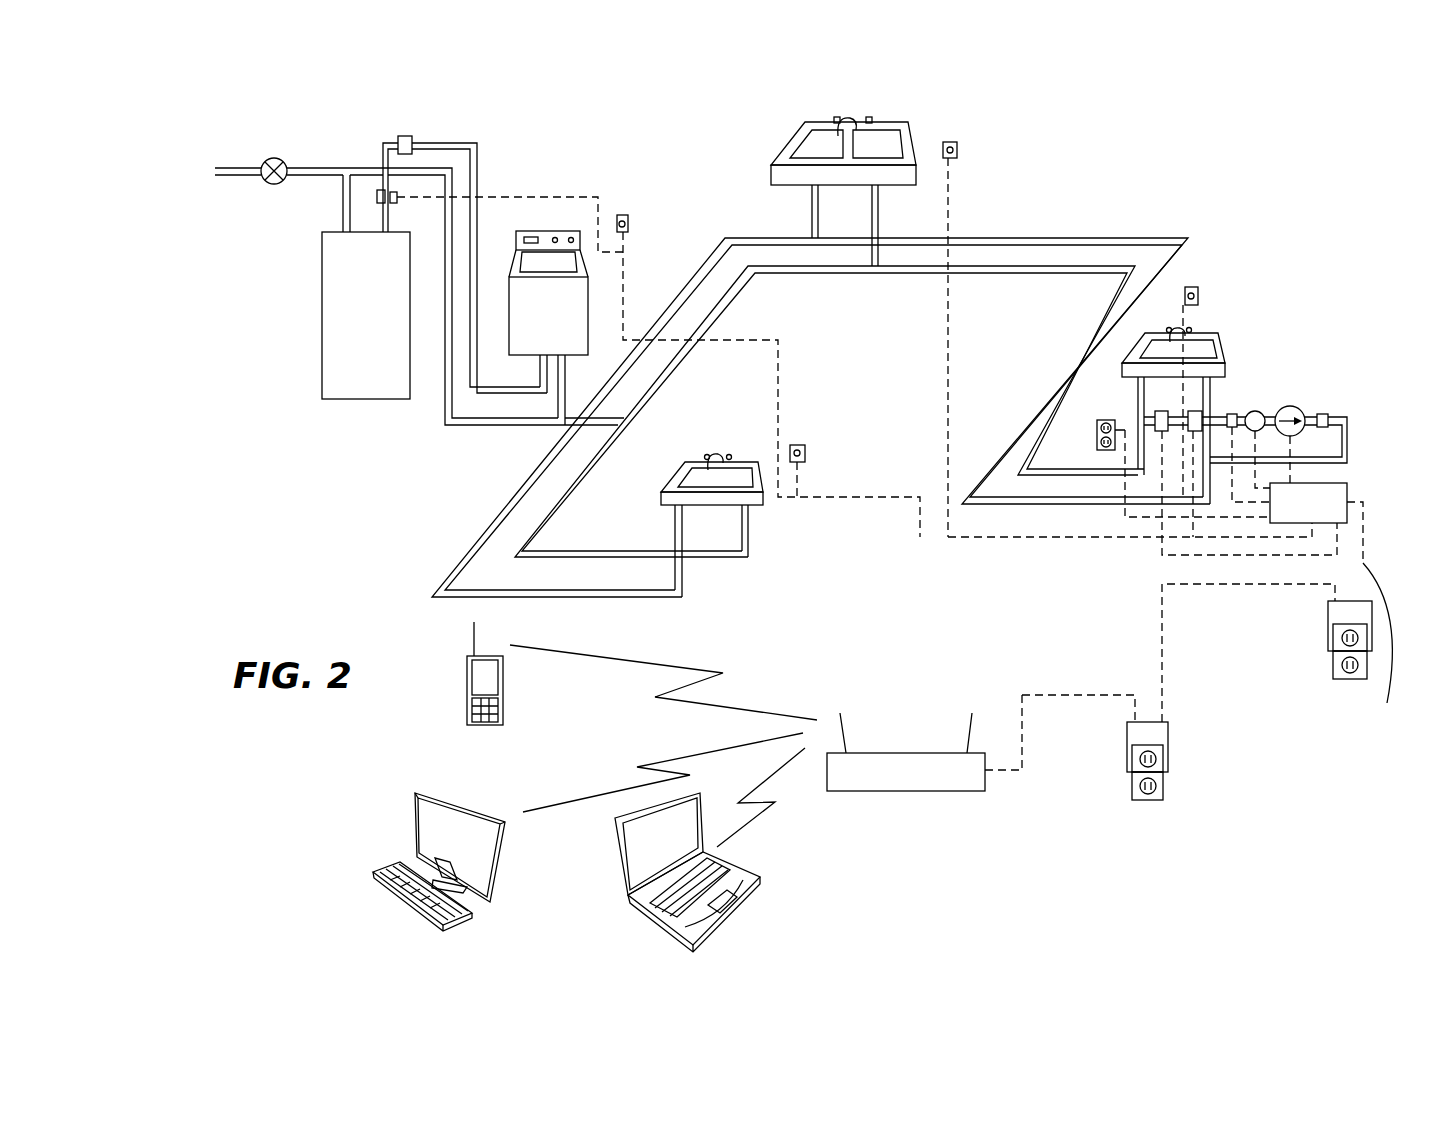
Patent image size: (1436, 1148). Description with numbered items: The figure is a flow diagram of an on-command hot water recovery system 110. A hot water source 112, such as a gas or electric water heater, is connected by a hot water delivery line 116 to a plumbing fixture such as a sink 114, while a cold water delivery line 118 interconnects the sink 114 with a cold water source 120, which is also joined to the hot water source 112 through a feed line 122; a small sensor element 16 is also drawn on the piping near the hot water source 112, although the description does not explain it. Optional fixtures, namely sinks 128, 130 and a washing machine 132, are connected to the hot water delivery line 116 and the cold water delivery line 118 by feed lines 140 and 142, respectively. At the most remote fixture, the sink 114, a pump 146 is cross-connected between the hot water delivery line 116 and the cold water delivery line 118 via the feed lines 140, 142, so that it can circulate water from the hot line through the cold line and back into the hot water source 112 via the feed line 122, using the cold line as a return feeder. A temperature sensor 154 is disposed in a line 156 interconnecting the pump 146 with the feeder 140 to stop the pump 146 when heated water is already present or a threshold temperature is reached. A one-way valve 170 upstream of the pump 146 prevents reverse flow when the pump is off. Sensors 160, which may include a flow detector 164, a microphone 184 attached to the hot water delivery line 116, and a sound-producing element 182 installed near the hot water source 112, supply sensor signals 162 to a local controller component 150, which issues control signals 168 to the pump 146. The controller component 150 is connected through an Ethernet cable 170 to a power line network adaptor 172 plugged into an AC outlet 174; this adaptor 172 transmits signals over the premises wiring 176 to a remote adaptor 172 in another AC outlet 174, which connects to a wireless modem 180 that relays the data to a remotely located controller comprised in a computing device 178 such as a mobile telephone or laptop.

The hot water recovery system 110 is at (1137, 178).
The hot water source 112 is at (342, 318).
The sink 114 is at (1223, 337).
The hot water delivery line 116 is at (1155, 237).
The cold water delivery line 118 is at (1075, 270).
The cold water source 120 is at (395, 291).
The feed line 122 is at (342, 196).
The sink 128 is at (913, 140).
The sink 130 is at (661, 500).
The washing machine 132 is at (511, 258).
The feed line 140 is at (682, 580).
The feed line 142 is at (750, 525).
The pump 146 is at (1293, 405).
The local controller component 150 is at (1340, 492).
The temperature sensor 154 is at (1235, 412).
The line 156 is at (1150, 427).
The sensor 160 is at (628, 216).
The sensor signals 162 is at (953, 287).
The flow detector 164 is at (1200, 411).
The control signals 168 is at (1265, 432).
The Ethernet cable 170 is at (1293, 456).
The power line network adaptor 172 is at (1328, 612).
The AC outlet 174 is at (1333, 666).
The premises wiring 176 is at (1172, 584).
The computing device 178 is at (415, 787).
The wireless modem 180 is at (1160, 411).
The sound-producing element 182 is at (412, 135).
The microphone 184 is at (1325, 412).
The temperature sensor 16 is at (380, 190).